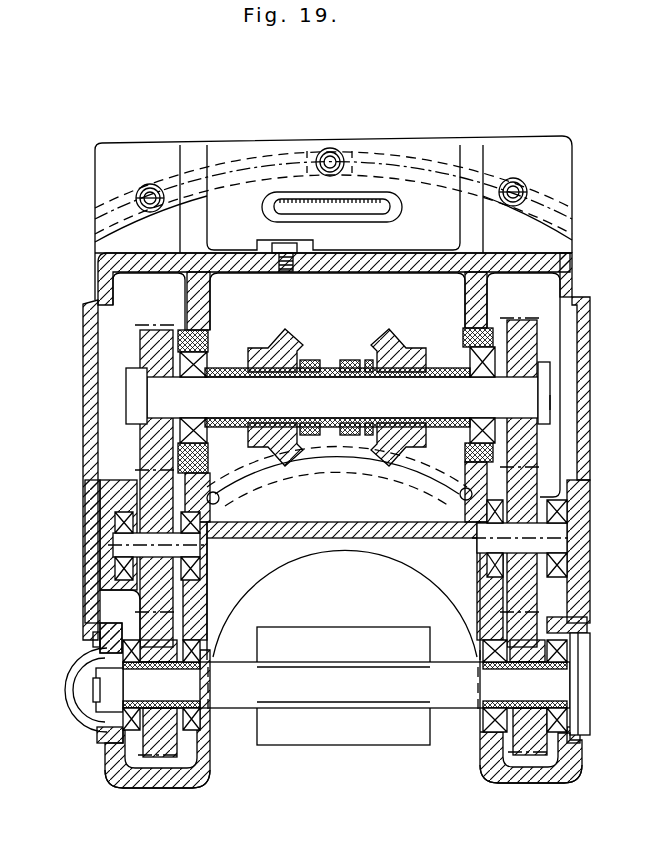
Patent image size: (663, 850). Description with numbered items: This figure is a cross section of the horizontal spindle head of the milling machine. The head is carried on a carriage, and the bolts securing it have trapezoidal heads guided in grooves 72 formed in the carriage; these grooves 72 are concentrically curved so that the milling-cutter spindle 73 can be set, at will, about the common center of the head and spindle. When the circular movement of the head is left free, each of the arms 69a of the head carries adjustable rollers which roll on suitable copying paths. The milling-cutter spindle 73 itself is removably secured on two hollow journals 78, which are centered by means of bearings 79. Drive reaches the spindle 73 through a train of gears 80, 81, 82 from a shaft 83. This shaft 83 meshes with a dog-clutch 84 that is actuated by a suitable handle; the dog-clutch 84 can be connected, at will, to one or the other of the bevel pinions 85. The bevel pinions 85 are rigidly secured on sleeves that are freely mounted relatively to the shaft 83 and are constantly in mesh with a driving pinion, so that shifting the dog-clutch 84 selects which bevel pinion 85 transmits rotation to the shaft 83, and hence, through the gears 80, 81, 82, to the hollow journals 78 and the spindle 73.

The grooves 72 is at (365, 155).
The milling-cutter spindle 73 is at (232, 693).
The hollow journals 78 is at (118, 735).
The bearings 79 is at (197, 768).
The gear 80 is at (100, 628).
The gear 81 is at (147, 500).
The gear 82 is at (140, 427).
The shaft 83 is at (155, 395).
The dog-clutch 84 is at (328, 428).
The bevel pinions 85 is at (288, 350).
The arms of the head 69a is at (512, 780).